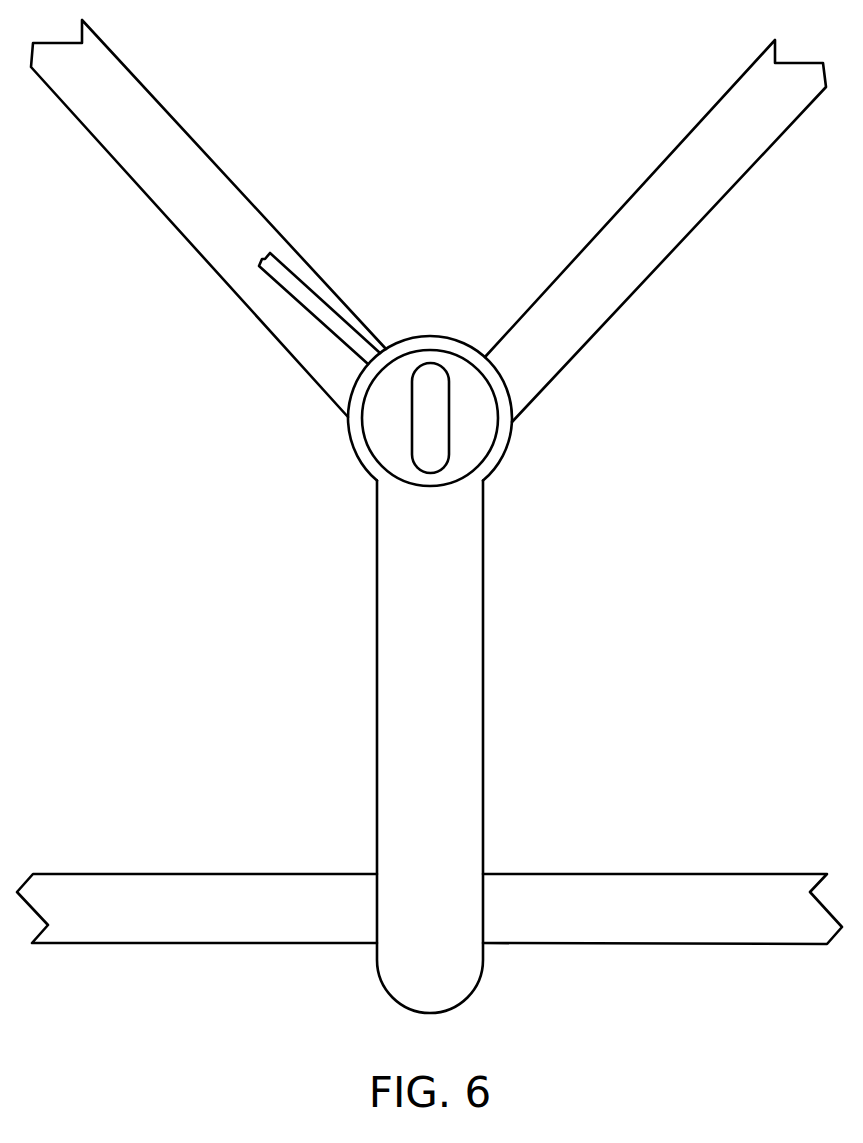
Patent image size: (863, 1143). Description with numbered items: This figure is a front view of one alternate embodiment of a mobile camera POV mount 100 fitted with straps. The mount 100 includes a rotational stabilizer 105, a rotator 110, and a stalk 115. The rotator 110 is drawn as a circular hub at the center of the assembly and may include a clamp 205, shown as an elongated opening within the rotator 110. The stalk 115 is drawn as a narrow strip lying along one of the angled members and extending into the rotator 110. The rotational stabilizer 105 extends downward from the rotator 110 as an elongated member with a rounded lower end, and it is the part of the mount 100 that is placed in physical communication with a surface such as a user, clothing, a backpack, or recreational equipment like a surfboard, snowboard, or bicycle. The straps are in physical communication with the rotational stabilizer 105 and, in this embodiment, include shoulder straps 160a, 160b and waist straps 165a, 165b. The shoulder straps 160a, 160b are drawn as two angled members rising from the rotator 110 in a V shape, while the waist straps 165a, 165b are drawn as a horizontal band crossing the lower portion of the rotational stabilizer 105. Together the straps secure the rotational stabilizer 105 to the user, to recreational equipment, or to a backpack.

The mobile camera POV mount 100 is at (210, 72).
The rotational stabilizer 105 is at (377, 612).
The rotator 110 is at (365, 465).
The stalk 115 is at (310, 318).
The shoulder strap 160a is at (182, 234).
The shoulder strap 160b is at (643, 285).
The waist strap 165a is at (202, 875).
The waist strap 165b is at (708, 877).
The clamp 205 is at (450, 418).